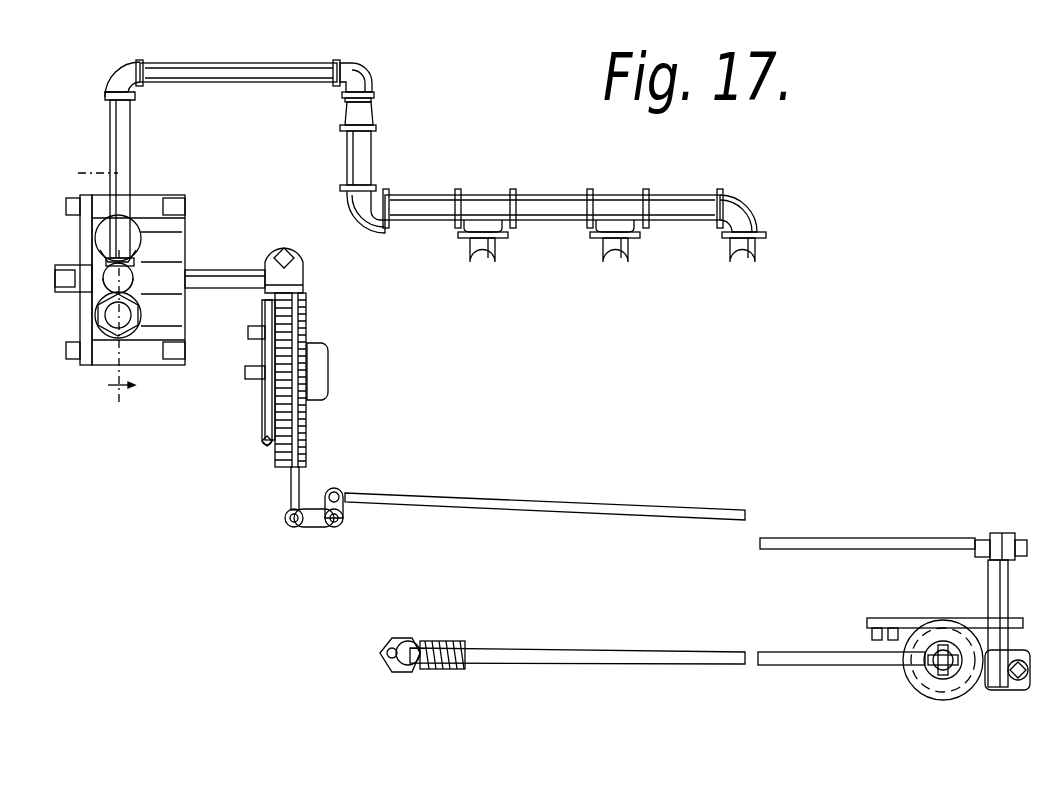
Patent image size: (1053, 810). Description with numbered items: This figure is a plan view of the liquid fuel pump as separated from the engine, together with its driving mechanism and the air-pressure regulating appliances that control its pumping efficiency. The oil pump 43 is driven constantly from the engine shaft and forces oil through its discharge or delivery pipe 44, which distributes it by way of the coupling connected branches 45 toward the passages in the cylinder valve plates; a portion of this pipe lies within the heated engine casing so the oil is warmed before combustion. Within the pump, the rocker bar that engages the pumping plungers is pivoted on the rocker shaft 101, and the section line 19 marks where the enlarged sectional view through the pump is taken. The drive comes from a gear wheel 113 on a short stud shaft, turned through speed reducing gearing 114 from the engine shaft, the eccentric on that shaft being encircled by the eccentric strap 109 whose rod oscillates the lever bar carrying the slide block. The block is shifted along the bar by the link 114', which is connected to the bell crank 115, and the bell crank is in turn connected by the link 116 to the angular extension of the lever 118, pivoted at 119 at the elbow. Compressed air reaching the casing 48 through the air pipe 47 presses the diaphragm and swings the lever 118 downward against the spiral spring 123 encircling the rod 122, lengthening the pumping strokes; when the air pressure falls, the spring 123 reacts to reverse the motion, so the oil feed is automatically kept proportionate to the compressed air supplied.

The discharge or delivery pipe 44 is at (115, 118).
The coupling connected branches 45 is at (475, 245).
The oil pump 43 is at (93, 280).
The section line 19 is at (82, 297).
The rocker shaft 101 is at (243, 247).
The speed reducing gearing 114 is at (324, 357).
The gear wheel 113 is at (278, 455).
The link 114' is at (334, 426).
The eccentric strap 109 is at (265, 410).
The bell crank 115 is at (317, 527).
The link 116 is at (686, 506).
The pivot 119 is at (927, 613).
The diaphragm or piston inclosing casing 48 is at (940, 687).
The air pipe 47 is at (923, 670).
The lever 118 is at (667, 634).
The spiral spring 123 is at (437, 640).
The rod 122 is at (385, 660).